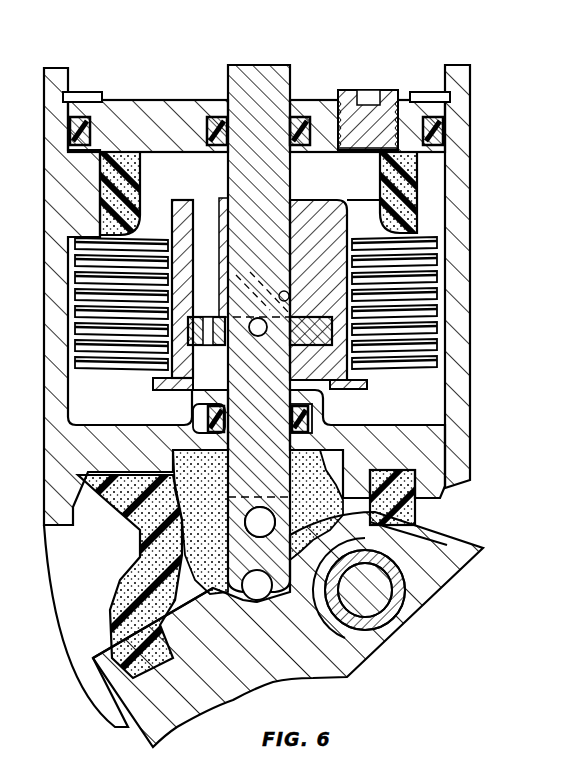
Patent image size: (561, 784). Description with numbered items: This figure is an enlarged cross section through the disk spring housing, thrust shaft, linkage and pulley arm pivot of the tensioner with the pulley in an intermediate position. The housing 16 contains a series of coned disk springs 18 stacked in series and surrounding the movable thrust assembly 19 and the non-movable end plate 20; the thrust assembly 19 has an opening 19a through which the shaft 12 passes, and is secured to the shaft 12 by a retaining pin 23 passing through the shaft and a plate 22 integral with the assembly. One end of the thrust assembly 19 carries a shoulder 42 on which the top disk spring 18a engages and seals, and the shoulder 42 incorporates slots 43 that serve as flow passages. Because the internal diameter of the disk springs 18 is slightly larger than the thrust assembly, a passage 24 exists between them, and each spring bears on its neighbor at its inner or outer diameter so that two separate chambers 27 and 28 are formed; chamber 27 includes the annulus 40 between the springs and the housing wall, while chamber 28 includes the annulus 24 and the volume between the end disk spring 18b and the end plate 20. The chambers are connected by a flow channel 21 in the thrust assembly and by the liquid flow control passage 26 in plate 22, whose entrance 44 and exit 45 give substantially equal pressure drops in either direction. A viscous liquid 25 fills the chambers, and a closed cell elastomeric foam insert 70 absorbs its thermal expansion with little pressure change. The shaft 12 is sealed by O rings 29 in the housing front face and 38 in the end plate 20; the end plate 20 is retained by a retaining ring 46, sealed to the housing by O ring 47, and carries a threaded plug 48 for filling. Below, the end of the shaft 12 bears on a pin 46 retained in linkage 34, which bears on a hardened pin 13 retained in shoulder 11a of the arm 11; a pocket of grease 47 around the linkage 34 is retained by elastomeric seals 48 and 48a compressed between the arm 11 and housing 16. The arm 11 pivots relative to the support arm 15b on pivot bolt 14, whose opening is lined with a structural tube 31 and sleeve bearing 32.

The arm 11 is at (455, 577).
The shoulder 11a is at (228, 602).
The shaft 12 is at (290, 85).
The pin 13 is at (260, 602).
The pivot bolt 14 is at (372, 600).
The tensioner support arm 15b is at (82, 678).
The housing 16 is at (470, 268).
The disk springs 18 is at (468, 233).
The top disk spring 18a is at (462, 372).
The end disk spring 18b is at (100, 217).
The thrust assembly 19 is at (350, 215).
The opening 19a is at (290, 180).
The end plate 20 is at (150, 100).
The flow channel 21 is at (207, 215).
The plate 22 is at (293, 350).
The retaining pin 23 is at (284, 298).
The passage 24 is at (338, 232).
The liquid 25 is at (440, 178).
The flow control passage 26 is at (206, 316).
The chamber 27 is at (463, 441).
The chamber 28 is at (325, 147).
The O ring 29 is at (208, 420).
The structural tube 31 is at (325, 622).
The sleeve bearing 32 is at (407, 617).
The linkage 34 is at (235, 555).
The O ring 38 is at (207, 117).
The annulus 40 is at (70, 368).
The shoulder 42 is at (370, 385).
The slots 43 is at (150, 390).
The entrance 44 is at (262, 320).
The exit 45 is at (200, 350).
The retaining ring 46 is at (88, 96).
The O ring 47 is at (72, 127).
The threaded plug 48 is at (385, 108).
The elastomeric seal 48a is at (418, 497).
The closed cell elastomeric foam insert 70 is at (105, 185).